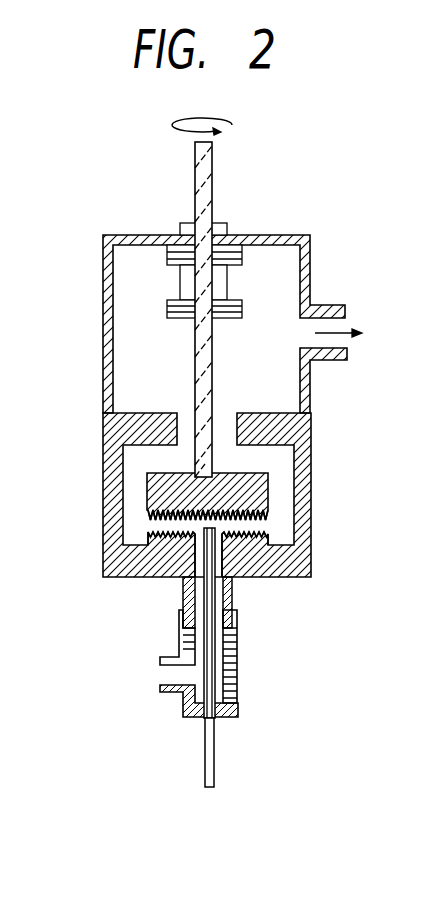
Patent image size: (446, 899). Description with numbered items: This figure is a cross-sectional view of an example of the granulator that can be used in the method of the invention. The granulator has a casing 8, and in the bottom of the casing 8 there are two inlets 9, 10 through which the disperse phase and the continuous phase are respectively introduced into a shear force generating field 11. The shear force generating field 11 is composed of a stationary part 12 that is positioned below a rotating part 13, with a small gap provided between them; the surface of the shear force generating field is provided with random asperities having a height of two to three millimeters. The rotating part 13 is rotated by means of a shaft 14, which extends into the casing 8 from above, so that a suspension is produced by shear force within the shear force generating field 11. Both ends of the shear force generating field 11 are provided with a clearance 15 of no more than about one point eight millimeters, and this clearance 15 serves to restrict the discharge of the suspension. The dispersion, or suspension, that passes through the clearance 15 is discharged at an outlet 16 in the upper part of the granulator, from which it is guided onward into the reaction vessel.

The casing 8 is at (313, 390).
The inlet 9 is at (221, 802).
The inlet 10 is at (150, 673).
The shear force generating field 11 is at (170, 522).
The stationary part 12 is at (112, 568).
The rotating part 13 is at (270, 492).
The shaft 14 is at (215, 203).
The clearance 15 is at (279, 522).
The outlet 16 is at (350, 334).